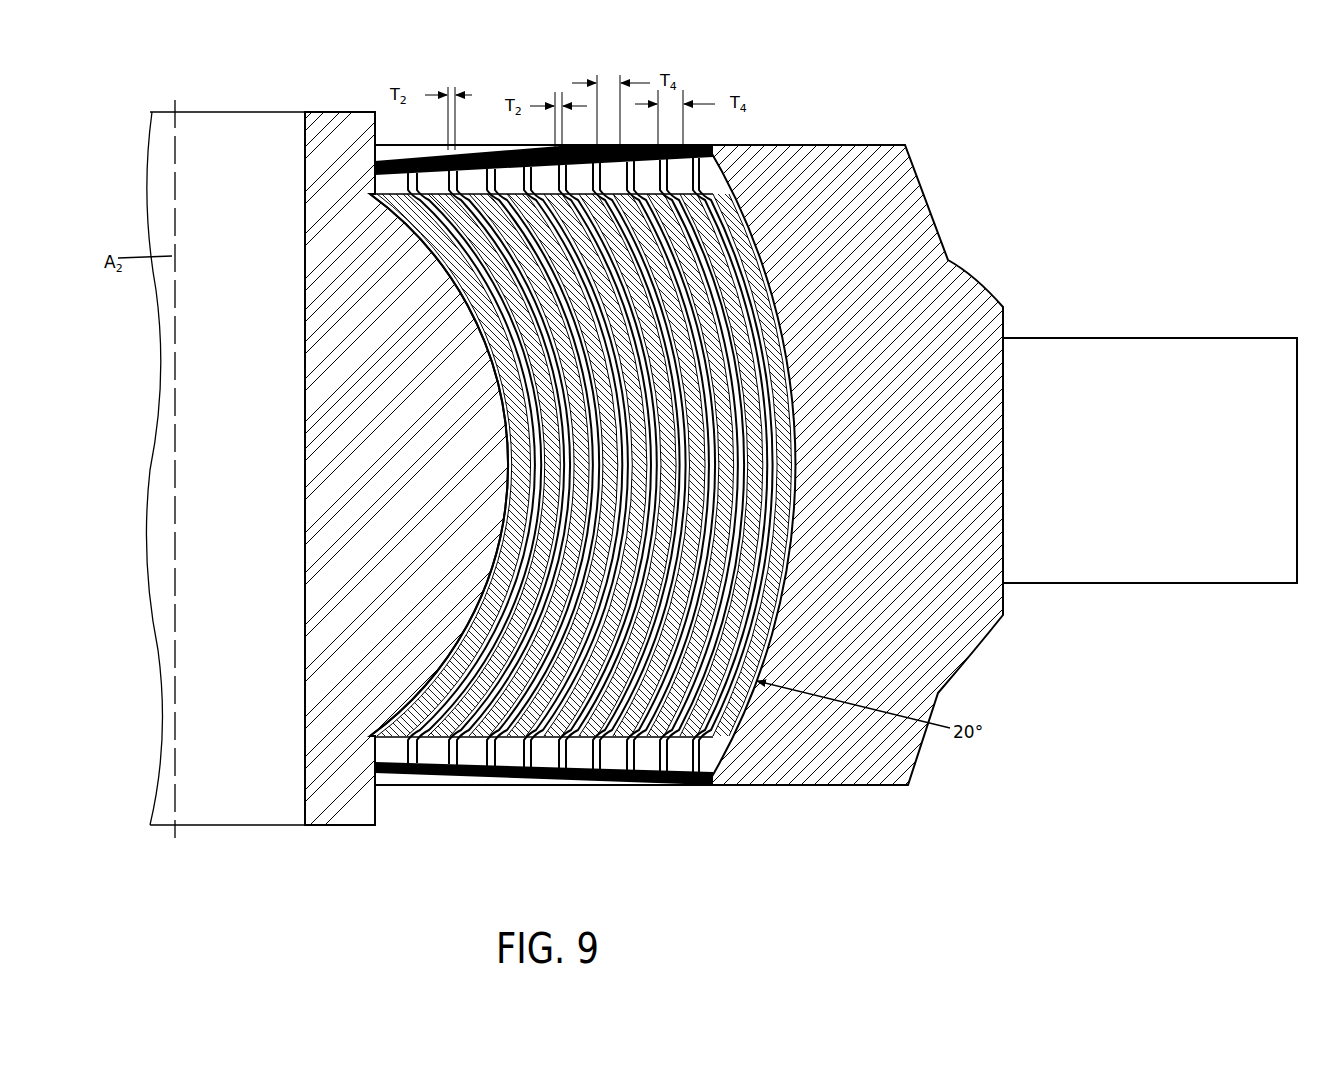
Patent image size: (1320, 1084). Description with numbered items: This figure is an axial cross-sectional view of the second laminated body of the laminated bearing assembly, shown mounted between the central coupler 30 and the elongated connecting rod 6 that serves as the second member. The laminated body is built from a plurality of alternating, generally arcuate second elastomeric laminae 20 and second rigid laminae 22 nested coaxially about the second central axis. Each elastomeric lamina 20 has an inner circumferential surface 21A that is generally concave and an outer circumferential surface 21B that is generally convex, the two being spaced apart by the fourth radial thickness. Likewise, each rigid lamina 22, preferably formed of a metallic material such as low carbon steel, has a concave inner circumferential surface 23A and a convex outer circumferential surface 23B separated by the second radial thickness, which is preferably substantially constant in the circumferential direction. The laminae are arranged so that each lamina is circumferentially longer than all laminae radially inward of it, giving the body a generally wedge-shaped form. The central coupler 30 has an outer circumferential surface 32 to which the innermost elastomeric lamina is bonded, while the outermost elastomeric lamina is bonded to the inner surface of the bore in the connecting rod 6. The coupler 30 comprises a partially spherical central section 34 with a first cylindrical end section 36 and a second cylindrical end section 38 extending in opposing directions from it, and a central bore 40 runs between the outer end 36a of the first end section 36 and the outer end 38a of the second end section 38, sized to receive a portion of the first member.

The connecting rod 6 is at (1006, 204).
The second elastomeric laminae 20 is at (508, 452).
The inner circumferential surface 21A is at (505, 500).
The outer circumferential surface 21B is at (535, 538).
The second rigid laminae 22 is at (526, 396).
The inner circumferential surface 23A is at (507, 598).
The outer circumferential surface 23B is at (510, 630).
The central coupler 30 is at (352, 848).
The outer circumferential surface 32 is at (500, 352).
The partially spherical central section 34 is at (303, 455).
The first cylindrical end section 36 is at (330, 110).
The outer end 36a is at (231, 112).
The second cylindrical end section 38 is at (322, 828).
The outer end 38a is at (232, 825).
The central bore 40 is at (303, 160).